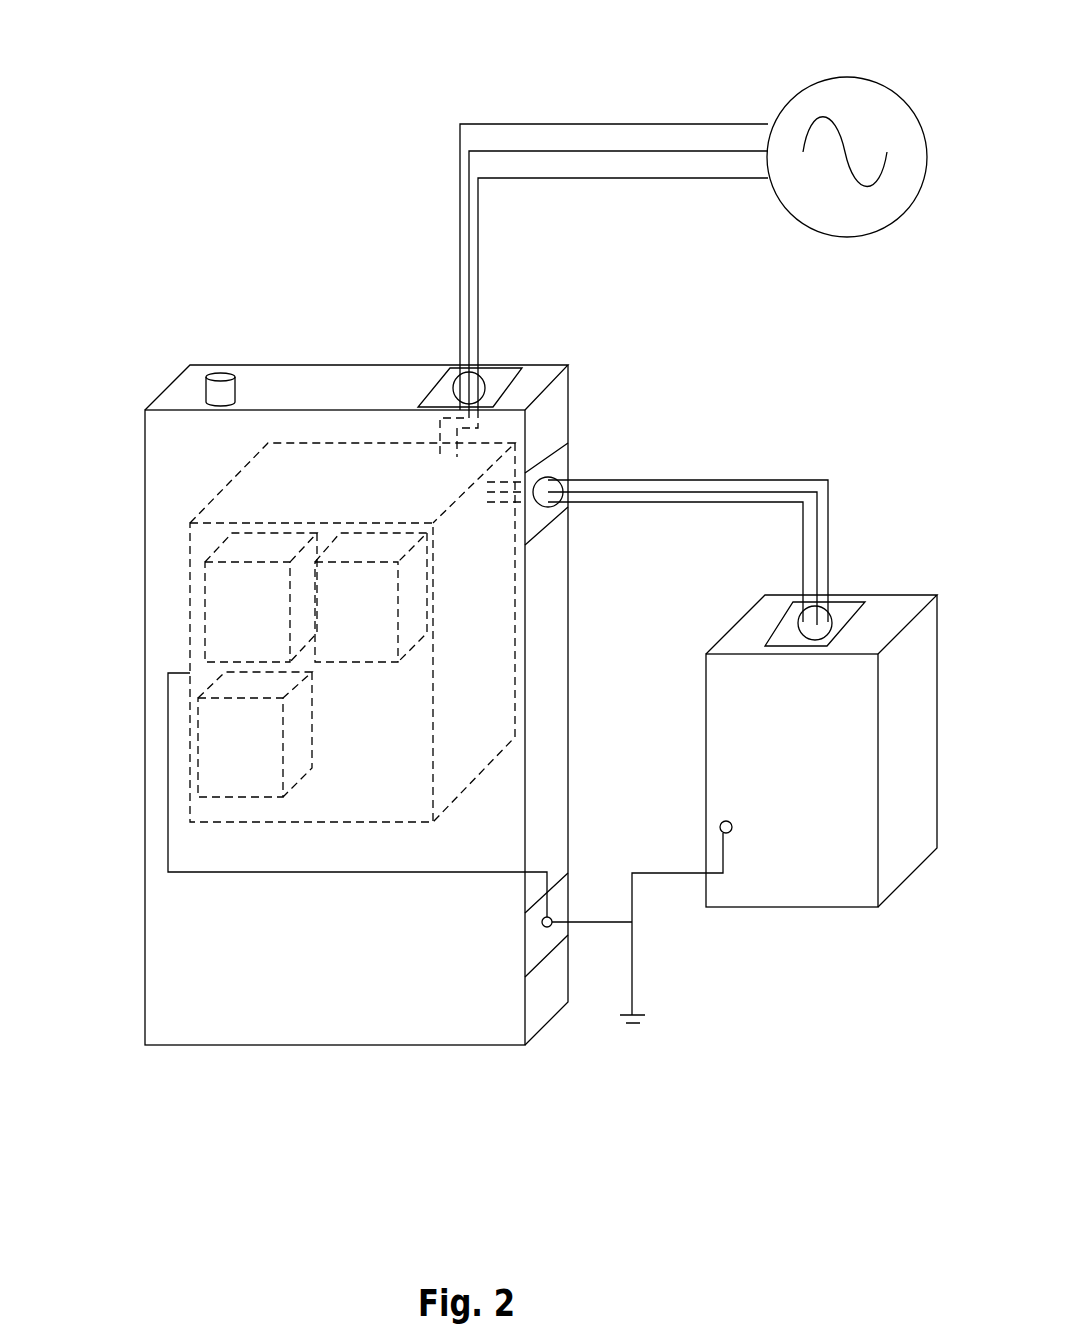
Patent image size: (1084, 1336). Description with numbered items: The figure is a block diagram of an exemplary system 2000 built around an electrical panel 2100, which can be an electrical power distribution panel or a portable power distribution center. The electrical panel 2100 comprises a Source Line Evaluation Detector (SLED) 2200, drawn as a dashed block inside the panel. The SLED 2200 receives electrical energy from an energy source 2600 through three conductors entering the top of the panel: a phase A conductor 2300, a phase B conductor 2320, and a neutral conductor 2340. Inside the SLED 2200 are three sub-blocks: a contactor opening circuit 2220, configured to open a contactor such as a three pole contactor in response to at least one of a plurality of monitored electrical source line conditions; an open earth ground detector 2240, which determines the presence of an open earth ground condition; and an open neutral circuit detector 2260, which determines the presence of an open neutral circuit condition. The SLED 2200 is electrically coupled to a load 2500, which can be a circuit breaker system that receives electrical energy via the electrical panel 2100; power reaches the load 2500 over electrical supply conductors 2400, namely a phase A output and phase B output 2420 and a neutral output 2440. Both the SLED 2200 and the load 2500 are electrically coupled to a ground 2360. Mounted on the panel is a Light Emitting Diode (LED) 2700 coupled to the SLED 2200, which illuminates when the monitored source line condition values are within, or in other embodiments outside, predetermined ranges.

The system 2000 is at (157, 154).
The electrical panel 2100 is at (356, 705).
The Source Line Evaluation Detector 2200 is at (356, 616).
The contactor opening circuit 2220 is at (261, 597).
The open earth ground detector 2240 is at (371, 597).
The open neutral circuit detector 2260 is at (255, 734).
The phase A conductor 2300 is at (612, 209).
The phase B conductor 2320 is at (626, 135).
The neutral conductor 2340 is at (623, 294).
The ground 2360 is at (450, 848).
The output cable 2400 is at (688, 489).
The phase A output 2420 is at (769, 475).
The neutral output 2440 is at (675, 562).
The load 2500 is at (821, 751).
The energy source 2600 is at (847, 136).
The Light Emitting Diode 2700 is at (224, 383).